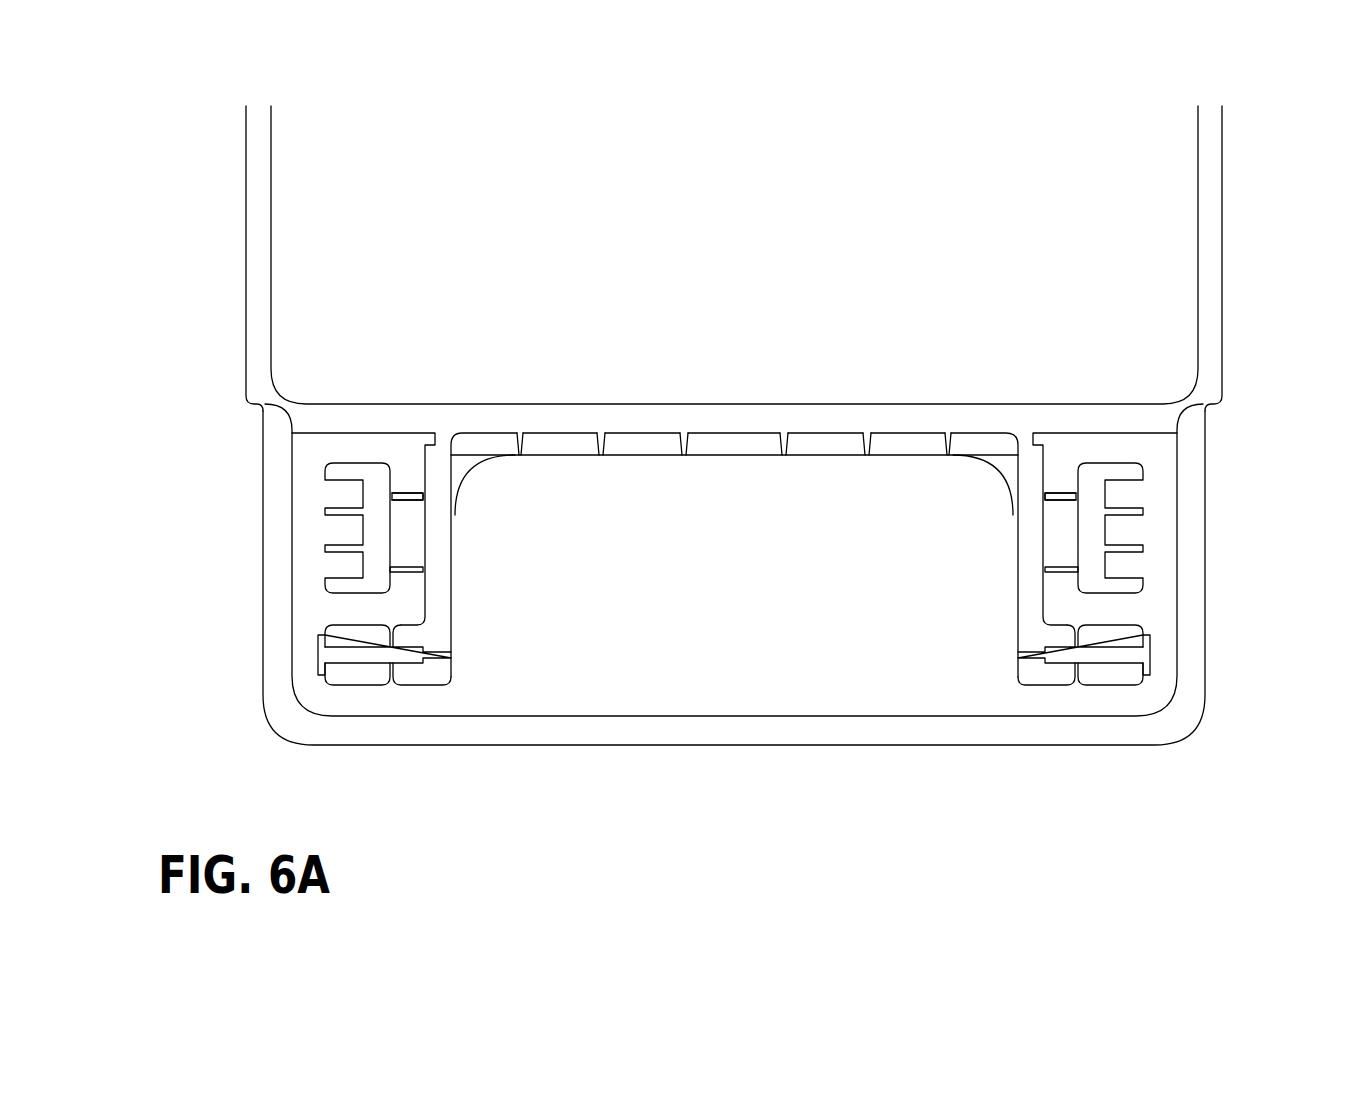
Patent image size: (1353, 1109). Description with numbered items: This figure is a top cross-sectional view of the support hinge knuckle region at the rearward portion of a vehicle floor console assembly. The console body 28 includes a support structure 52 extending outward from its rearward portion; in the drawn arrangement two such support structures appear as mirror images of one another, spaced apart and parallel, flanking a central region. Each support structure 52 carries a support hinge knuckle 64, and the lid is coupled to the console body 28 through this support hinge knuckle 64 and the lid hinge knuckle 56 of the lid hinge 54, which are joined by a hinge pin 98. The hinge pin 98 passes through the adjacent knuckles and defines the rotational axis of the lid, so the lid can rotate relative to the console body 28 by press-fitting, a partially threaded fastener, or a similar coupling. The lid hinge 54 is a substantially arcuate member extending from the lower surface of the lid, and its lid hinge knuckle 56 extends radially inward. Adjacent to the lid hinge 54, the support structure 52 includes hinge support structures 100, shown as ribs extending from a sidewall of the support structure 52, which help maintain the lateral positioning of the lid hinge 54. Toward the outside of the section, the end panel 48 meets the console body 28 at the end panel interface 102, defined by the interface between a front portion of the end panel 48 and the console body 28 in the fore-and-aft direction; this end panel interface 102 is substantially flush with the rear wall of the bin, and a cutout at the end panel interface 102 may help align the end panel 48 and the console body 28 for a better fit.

The console body 28 is at (1210, 247).
The end panel interface 102 is at (1226, 404).
The end panel 48 is at (735, 718).
The support structure 52 is at (440, 622).
The lid hinge 54 is at (328, 585).
The hinge support structure 100 is at (423, 497).
The hinge pin 98 is at (318, 652).
The lid hinge knuckle 56 is at (350, 672).
The support hinge knuckle 64 is at (433, 677).